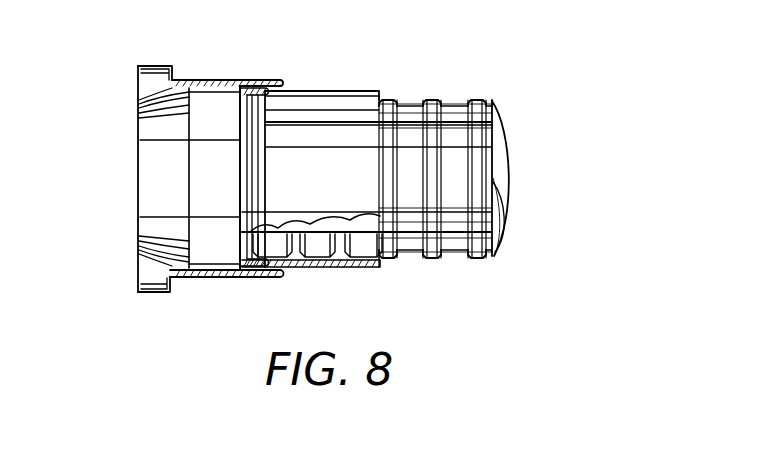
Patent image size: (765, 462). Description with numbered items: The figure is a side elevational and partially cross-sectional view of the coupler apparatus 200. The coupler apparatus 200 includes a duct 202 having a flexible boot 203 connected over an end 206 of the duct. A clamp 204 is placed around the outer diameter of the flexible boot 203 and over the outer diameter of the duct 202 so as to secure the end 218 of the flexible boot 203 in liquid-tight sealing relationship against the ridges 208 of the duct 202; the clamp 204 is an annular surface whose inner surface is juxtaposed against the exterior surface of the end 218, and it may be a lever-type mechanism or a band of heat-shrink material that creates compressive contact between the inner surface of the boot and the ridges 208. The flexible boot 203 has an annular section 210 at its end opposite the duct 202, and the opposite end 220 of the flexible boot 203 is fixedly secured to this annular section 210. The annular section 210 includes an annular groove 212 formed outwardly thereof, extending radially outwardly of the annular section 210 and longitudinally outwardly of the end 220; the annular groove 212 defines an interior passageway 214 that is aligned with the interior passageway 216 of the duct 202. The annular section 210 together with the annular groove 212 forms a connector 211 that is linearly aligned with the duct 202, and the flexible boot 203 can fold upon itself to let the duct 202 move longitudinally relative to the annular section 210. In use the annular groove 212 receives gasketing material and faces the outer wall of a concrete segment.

The coupler apparatus 200 is at (556, 117).
The duct 202 is at (450, 106).
The flexible boot 203 is at (238, 81).
The clamp 204 is at (348, 92).
The end 206 is at (248, 148).
The ridges 208 is at (292, 263).
The annular section 210 is at (175, 262).
The connector 211 is at (168, 282).
The annular groove 212 is at (138, 279).
The interior passageway 214 is at (152, 118).
The interior passageway 216 is at (499, 207).
The end 218 is at (348, 262).
The opposite end 220 is at (180, 276).